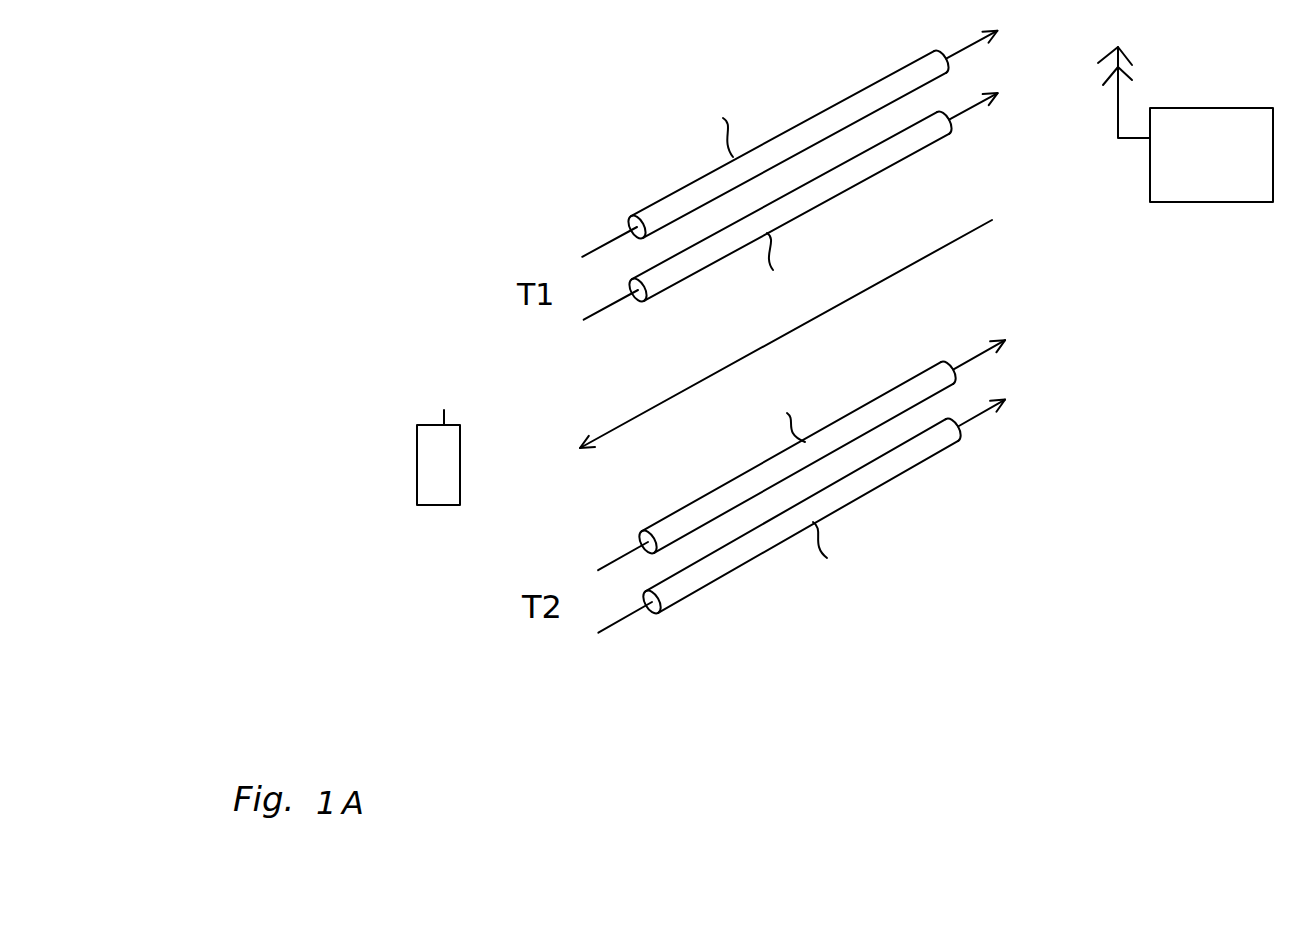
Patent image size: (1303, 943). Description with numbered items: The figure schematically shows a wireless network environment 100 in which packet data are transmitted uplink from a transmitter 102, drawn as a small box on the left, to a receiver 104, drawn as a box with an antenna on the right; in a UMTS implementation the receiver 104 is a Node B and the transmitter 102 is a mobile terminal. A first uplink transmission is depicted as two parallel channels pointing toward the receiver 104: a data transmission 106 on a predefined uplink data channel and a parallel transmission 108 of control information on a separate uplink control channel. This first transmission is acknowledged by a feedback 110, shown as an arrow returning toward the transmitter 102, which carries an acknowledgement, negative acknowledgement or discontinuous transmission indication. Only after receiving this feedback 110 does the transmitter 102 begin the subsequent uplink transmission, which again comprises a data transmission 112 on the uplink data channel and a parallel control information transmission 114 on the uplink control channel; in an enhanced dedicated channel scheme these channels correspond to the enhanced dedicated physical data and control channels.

The wireless network environment 100 is at (995, 731).
The transmitter 102 is at (422, 505).
The receiver 104 is at (1207, 202).
The data transmission 106 is at (600, 230).
The parallel transmission of control information 108 is at (610, 322).
The feedback 110 is at (958, 262).
The data transmission 112 is at (615, 545).
The parallel control information transmission 114 is at (630, 630).